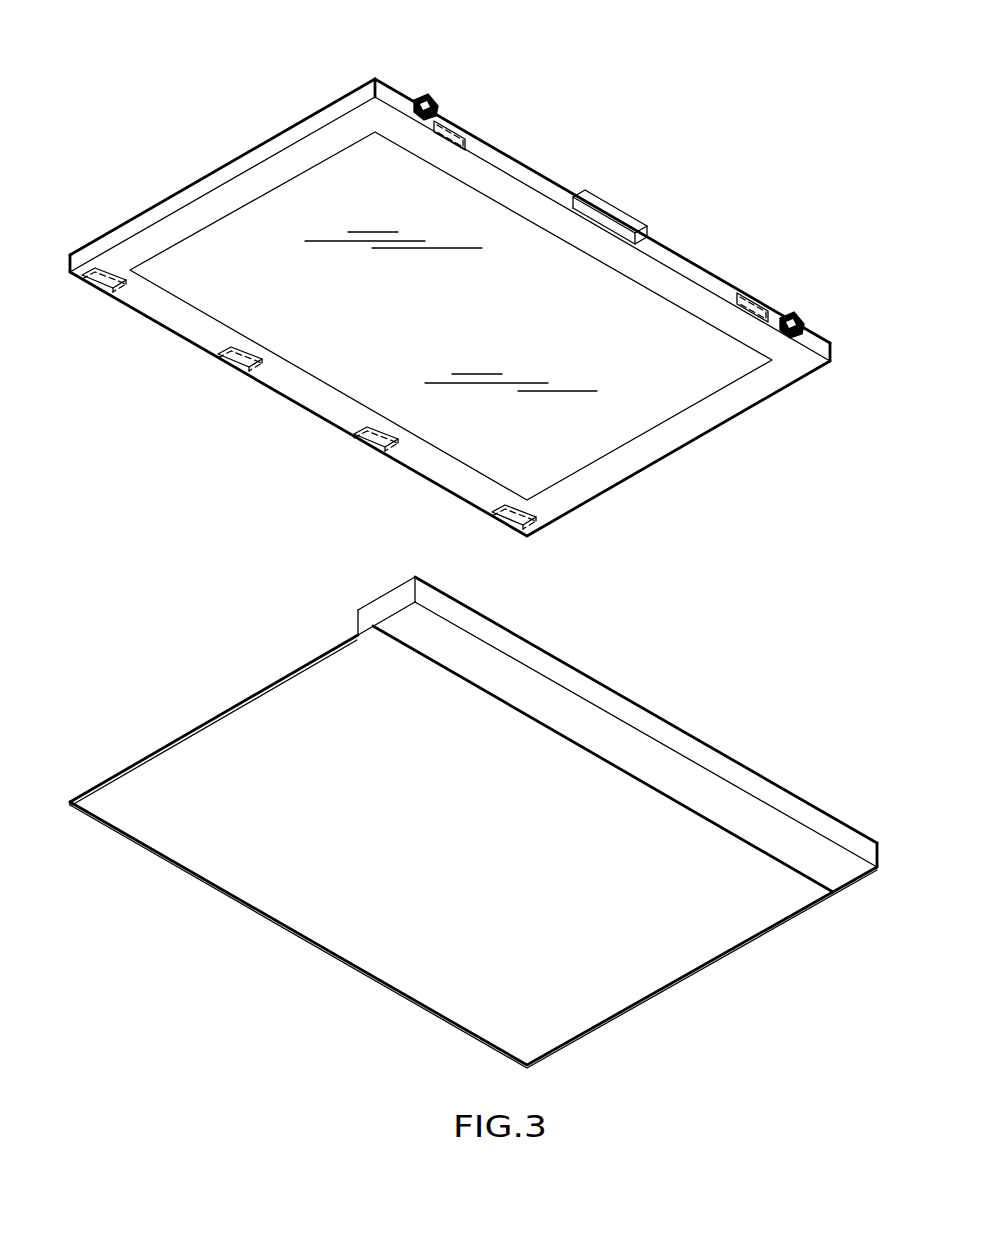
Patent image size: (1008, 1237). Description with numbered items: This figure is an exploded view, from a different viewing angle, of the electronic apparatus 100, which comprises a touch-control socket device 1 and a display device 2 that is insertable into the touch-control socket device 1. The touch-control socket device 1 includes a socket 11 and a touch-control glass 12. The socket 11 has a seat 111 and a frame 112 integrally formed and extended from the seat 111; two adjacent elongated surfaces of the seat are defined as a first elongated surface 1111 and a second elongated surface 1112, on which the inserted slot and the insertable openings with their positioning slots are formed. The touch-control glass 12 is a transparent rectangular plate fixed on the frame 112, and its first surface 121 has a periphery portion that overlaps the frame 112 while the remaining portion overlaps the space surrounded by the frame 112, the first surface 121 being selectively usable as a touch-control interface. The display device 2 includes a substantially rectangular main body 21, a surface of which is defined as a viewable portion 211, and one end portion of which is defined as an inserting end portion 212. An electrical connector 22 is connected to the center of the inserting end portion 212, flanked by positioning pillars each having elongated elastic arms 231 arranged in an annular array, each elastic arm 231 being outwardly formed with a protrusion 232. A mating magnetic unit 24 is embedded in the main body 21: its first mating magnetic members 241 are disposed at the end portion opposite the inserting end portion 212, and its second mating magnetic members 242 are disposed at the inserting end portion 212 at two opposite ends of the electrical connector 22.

The electronic apparatus 100 is at (773, 88).
The touch-control socket device 1 is at (182, 706).
The socket 11 is at (202, 535).
The seat 111 is at (262, 512).
The first elongated surface 1111 is at (357, 614).
The second elongated surface 1112 is at (385, 588).
The frame 112 is at (262, 690).
The touch-control glass 12 is at (265, 968).
The first surface 121 is at (262, 893).
The display device 2 is at (172, 177).
The main body 21 is at (290, 140).
The viewable portion 211 is at (247, 203).
The inserting end portion 212 is at (388, 93).
The electrical connector 22 is at (615, 213).
The elastic arms 231 is at (437, 104).
The protrusions 232 is at (418, 100).
The mating magnetic unit 24 is at (805, 256).
The first mating magnetic members 241 is at (516, 522).
The second mating magnetic members 242 is at (758, 300).